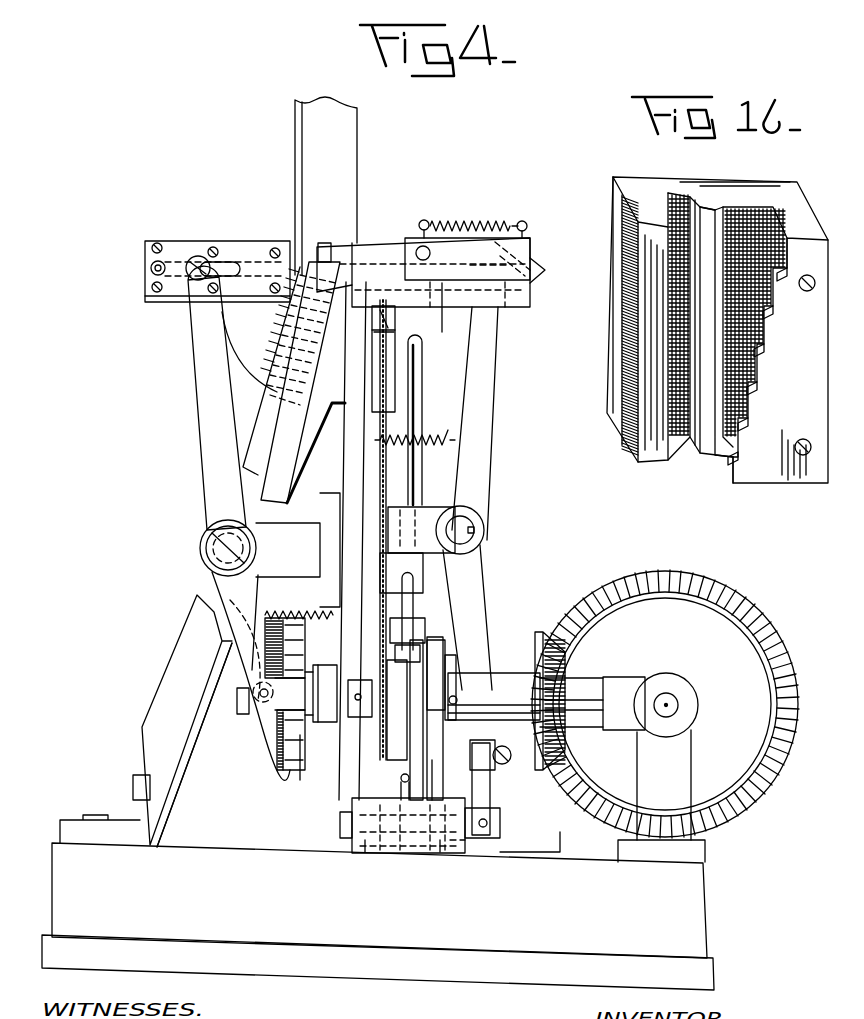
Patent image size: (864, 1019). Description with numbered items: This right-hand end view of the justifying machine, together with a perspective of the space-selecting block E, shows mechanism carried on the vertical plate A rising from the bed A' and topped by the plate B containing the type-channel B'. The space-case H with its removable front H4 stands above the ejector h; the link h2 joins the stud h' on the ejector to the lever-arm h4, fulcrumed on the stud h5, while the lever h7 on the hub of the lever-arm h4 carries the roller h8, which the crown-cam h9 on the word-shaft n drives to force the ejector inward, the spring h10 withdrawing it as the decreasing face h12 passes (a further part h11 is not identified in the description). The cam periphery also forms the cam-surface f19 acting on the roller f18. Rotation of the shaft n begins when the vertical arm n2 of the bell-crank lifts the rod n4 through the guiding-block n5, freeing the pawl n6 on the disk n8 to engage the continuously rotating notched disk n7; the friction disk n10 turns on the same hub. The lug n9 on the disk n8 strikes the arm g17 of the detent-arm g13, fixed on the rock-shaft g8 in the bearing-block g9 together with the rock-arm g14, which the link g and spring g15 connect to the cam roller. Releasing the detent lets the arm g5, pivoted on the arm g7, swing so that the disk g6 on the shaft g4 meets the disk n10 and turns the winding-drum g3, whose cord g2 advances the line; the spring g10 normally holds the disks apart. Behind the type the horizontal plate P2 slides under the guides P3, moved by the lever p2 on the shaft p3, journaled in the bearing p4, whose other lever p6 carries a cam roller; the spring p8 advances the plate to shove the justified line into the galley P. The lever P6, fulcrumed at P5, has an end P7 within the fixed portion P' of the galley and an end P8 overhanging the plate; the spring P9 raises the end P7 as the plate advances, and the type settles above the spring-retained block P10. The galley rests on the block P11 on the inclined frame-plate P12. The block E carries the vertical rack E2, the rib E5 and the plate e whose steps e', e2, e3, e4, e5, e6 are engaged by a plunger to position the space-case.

In FIG. 4, the bed A' is at (378, 902).
In FIG. 4, the vertical plate A is at (352, 541).
In FIG. 4, the space-case H is at (326, 186).
In FIG. 4, the removable front H4 is at (295, 174).
In FIG. 4, the end of lever P7 is at (325, 243).
In FIG. 4, the plate B is at (423, 288).
In FIG. 4, the type-channel B' is at (364, 247).
In FIG. 4, the fulcrum P5 is at (421, 248).
In FIG. 4, the end of lever P8 is at (545, 268).
In FIG. 4, the lever P6 is at (445, 222).
In FIG. 4, the spring P9 is at (480, 224).
In FIG. 4, the guides P3 is at (530, 242).
In FIG. 4, the horizontal plate P2 is at (530, 288).
In FIG. 4, the lever p2 is at (498, 404).
In FIG. 4, the word-shaft n is at (590, 690).
In FIG. 4, the vertical arm of bell-crank lever n2 is at (378, 312).
In FIG. 4, the cord g2 is at (392, 400).
In FIG. 4, the rod n4 is at (420, 372).
In FIG. 4, the spring p8 is at (438, 436).
In FIG. 4, the bearing p4 is at (425, 510).
In FIG. 4, the shaft p3 is at (474, 530).
In FIG. 4, the lever p6 is at (488, 575).
In FIG. 4, the guiding-block n5 is at (424, 582).
In FIG. 4, the pawl n6 is at (414, 618).
In FIG. 4, the disk n8 is at (425, 630).
In FIG. 4, the notched disk n7 is at (420, 652).
In FIG. 4, the friction disk n10 is at (455, 660).
In FIG. 4, the disk g6 is at (440, 672).
In FIG. 4, the shaft g4 is at (462, 690).
In FIG. 4, the arm g17 is at (412, 710).
In FIG. 4, the winding-drum g3 is at (372, 718).
In FIG. 4, the detent-arm g13 is at (425, 735).
In FIG. 4, the horizontal arm g7 is at (368, 850).
In FIG. 4, the bearing-block g9 is at (458, 850).
In FIG. 4, the rock-shaft g8 is at (340, 814).
In FIG. 4, the rock-arm g14 is at (492, 794).
In FIG. 4, the spring g15 is at (515, 746).
In FIG. 4, the link g is at (480, 742).
In FIG. 4, the arm g5 is at (438, 766).
In FIG. 4, the spring g10 is at (410, 782).
In FIG. 4, the lug n9 is at (392, 662).
In FIG. 4, the spring h10 is at (312, 612).
In FIG. 4, the ejector h is at (217, 256).
In FIG. 4, the stud h' is at (135, 270).
In FIG. 4, the link h2 is at (175, 262).
In FIG. 4, the lever-arm h4 is at (217, 398).
In FIG. 4, the stud h5 is at (256, 548).
In FIG. 4, the decreasing face h12 is at (275, 725).
In FIG. 4, the lever h7 is at (236, 576).
In FIG. 4, the pawl h11 is at (262, 650).
In FIG. 4, the crown-cam h9 is at (258, 715).
In FIG. 4, the roller h8 is at (243, 690).
In FIG. 4, the roller f18 is at (300, 742).
In FIG. 4, the cam-surface f19 is at (300, 772).
In FIG. 4, the galley P is at (239, 554).
In FIG. 4, the fixed portion of galley P' is at (279, 371).
In FIG. 4, the spring-retained block P10 is at (290, 380).
In FIG. 4, the block P11 is at (132, 782).
In FIG. 4, the inclined frame-plate P12 is at (168, 786).
In FIG. 16, the selecting-block E is at (717, 339).
In FIG. 16, the rack E2 is at (630, 298).
In FIG. 16, the rib E5 is at (716, 212).
In FIG. 16, the step e' is at (795, 268).
In FIG. 16, the step e2 is at (776, 306).
In FIG. 16, the step e3 is at (767, 344).
In FIG. 16, the step e4 is at (760, 380).
In FIG. 16, the step e5 is at (750, 416).
In FIG. 16, the step e6 is at (740, 454).
In FIG. 16, the plate e is at (771, 360).